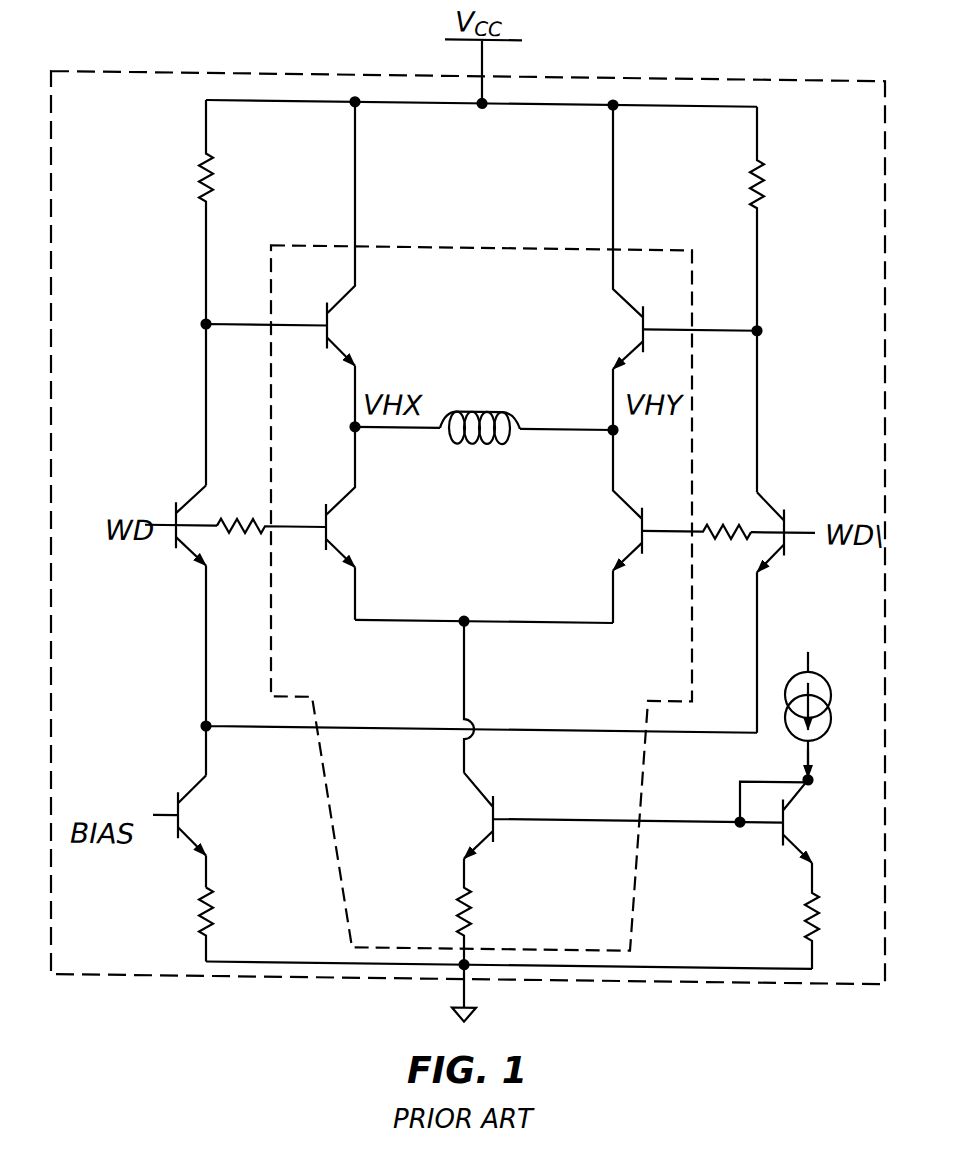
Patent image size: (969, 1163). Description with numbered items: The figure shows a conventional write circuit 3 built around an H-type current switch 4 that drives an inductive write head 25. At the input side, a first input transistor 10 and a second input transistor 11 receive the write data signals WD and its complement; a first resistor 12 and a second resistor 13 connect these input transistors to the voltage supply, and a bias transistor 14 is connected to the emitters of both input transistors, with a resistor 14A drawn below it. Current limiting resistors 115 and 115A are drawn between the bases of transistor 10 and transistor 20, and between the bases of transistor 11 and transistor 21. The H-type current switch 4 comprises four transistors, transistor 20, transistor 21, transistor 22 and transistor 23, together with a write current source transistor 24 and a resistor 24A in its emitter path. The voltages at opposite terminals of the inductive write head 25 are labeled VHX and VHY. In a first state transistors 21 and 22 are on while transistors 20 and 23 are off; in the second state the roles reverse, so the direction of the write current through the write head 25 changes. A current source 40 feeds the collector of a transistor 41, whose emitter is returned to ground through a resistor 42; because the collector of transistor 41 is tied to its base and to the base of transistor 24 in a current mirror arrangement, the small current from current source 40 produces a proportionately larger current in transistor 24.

The conventional write circuit 3 is at (160, 69).
The H-type current switch 4 is at (455, 240).
The first input transistor 10 is at (176, 510).
The second input transistor 11 is at (784, 513).
The first resistor 12 is at (206, 150).
The second resistor 13 is at (757, 151).
The bias transistor 14 is at (178, 798).
The emitter resistor of Q6 14A is at (206, 928).
The transistor Q4 20 is at (326, 508).
The transistor Q3 21 is at (642, 510).
The transistor Q1 22 is at (327, 306).
The transistor Q2 23 is at (643, 302).
The write current source transistor 24 is at (493, 804).
The resistor 24A is at (470, 926).
The inductive write head 25 is at (478, 406).
The current source 40 is at (822, 680).
The transistor 41 is at (783, 821).
The resistor 42 is at (812, 930).
The base resistor 115 is at (218, 527).
The base resistor 115A is at (725, 526).